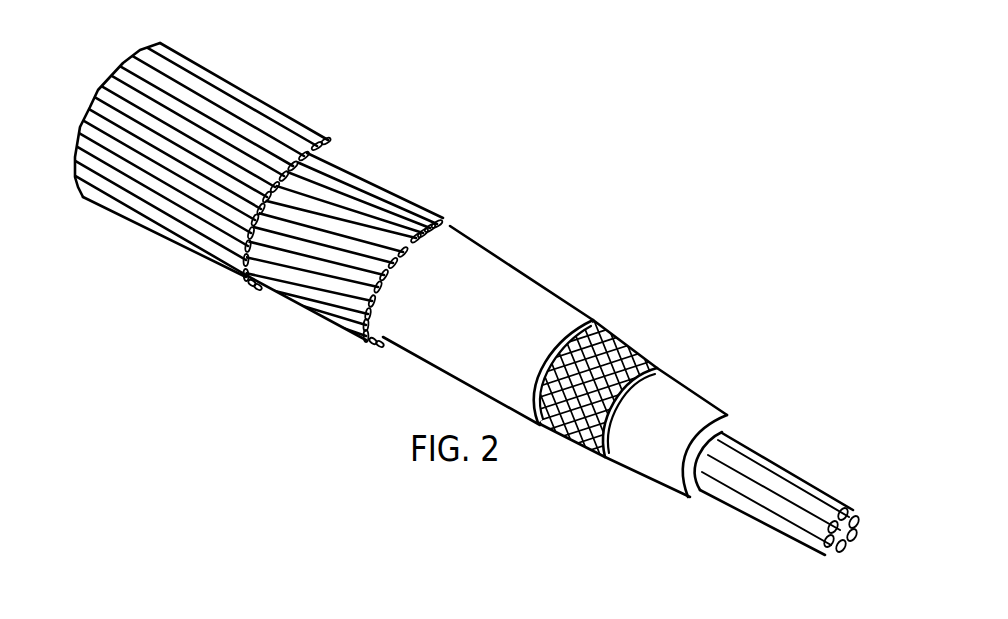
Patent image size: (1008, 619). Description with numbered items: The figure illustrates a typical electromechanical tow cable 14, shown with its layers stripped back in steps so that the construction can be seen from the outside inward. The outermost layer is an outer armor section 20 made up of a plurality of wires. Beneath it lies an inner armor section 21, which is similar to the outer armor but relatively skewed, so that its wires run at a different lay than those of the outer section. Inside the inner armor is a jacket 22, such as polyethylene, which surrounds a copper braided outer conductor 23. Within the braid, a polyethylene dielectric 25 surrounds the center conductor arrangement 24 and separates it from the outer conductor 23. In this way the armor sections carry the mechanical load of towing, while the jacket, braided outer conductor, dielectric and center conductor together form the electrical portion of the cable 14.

The cable 14 is at (479, 243).
The outer armor section 20 is at (308, 130).
The inner armor section 21 is at (420, 200).
The jacket 22 is at (515, 280).
The copper braided outer conductor 23 is at (623, 344).
The center conductor arrangement 24 is at (783, 466).
The polyethylene dielectric 25 is at (705, 405).